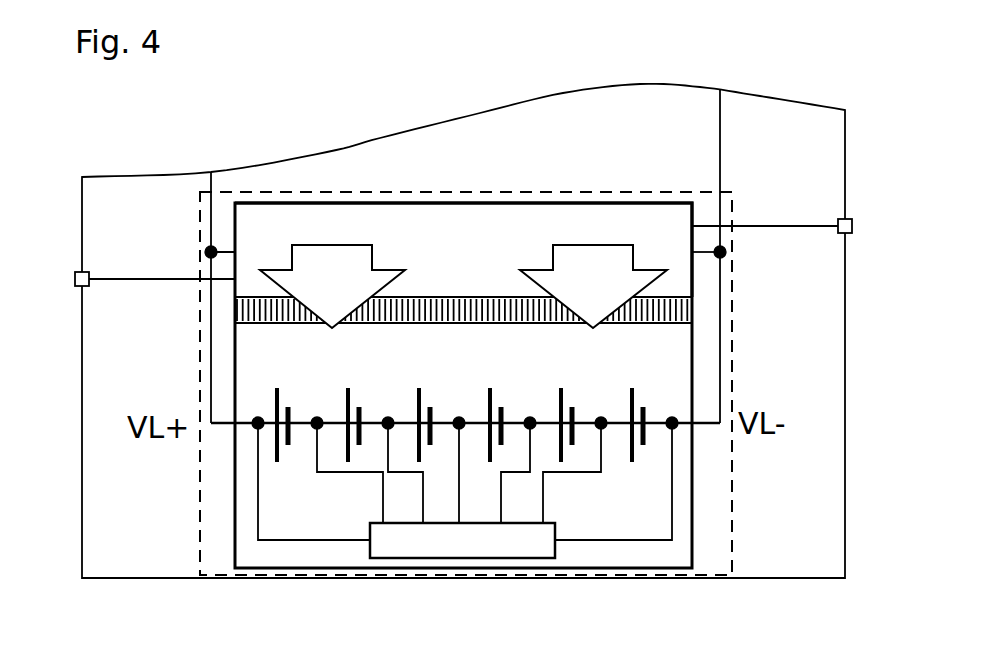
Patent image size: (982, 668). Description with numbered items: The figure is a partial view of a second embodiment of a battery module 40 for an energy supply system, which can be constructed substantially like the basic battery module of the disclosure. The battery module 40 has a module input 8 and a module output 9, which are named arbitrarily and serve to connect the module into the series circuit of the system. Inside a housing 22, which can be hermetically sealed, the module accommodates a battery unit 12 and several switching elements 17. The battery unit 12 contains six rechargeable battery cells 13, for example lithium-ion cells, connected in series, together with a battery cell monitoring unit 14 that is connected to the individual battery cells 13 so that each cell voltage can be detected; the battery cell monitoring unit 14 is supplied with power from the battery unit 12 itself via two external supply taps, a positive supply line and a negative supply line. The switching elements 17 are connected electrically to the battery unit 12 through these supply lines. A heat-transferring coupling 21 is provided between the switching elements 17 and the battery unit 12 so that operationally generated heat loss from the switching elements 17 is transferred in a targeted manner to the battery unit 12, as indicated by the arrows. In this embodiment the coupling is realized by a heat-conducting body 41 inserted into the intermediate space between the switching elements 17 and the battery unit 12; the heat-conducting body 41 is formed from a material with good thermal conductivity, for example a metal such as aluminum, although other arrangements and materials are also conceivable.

The module input 8 is at (75, 281).
The module output 9 is at (853, 231).
The battery unit 12 is at (232, 497).
The battery cells 13 is at (640, 393).
The battery cell monitoring unit 14 is at (452, 550).
The switching elements 17 is at (542, 223).
The heat-transferring coupling 21 is at (350, 283).
The housing 22 is at (731, 513).
The battery module 40 is at (377, 137).
The heat-conducting body 41 is at (457, 308).